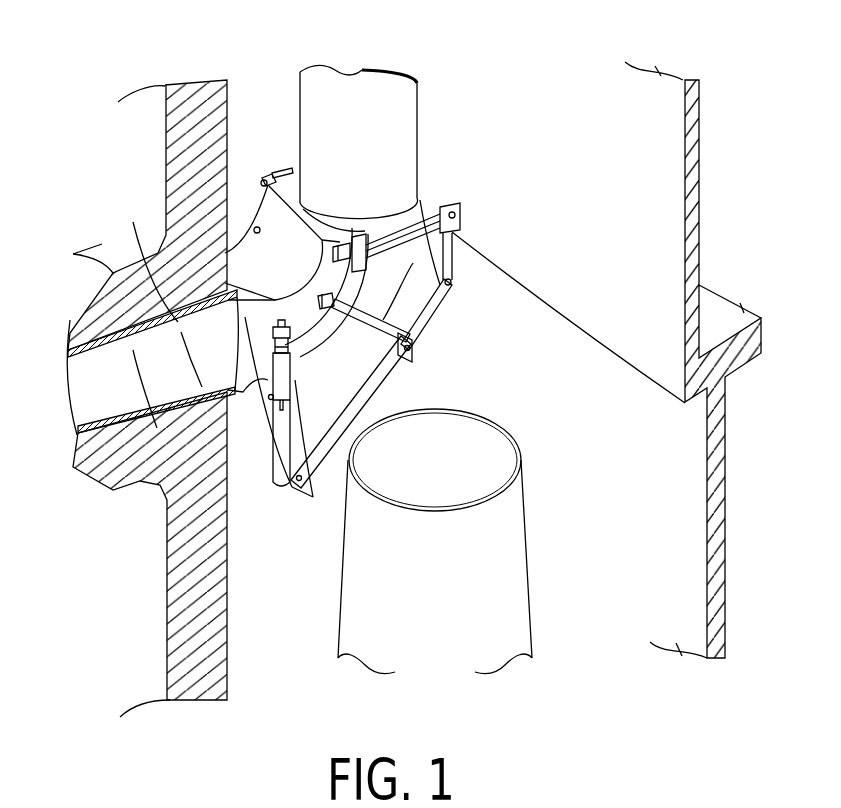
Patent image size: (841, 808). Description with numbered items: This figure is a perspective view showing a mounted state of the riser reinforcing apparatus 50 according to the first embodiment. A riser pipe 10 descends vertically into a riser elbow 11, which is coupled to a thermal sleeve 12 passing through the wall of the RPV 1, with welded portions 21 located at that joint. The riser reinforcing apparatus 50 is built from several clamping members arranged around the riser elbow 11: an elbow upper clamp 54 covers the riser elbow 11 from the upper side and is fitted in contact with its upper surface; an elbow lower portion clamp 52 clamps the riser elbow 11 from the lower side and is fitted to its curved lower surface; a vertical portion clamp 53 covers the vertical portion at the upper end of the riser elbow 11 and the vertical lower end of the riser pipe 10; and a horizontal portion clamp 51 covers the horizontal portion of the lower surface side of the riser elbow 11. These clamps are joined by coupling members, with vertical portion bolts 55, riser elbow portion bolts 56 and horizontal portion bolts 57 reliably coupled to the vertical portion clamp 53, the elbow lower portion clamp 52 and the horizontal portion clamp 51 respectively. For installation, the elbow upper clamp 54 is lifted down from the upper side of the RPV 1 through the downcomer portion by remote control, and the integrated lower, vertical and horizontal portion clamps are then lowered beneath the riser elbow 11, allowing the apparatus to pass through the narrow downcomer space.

The RPV 1 is at (200, 100).
The riser pipe 10 is at (329, 74).
The riser elbow 11 is at (413, 252).
The thermal sleeve 12 is at (85, 395).
The welded portions 21 is at (127, 272).
The riser reinforcing apparatus 50 is at (486, 70).
The horizontal portion clamp 51 is at (250, 443).
The elbow lower portion clamp 52 is at (360, 378).
The vertical portion clamp 53 is at (427, 182).
The elbow upper clamp 54 is at (254, 248).
The vertical portion bolts 55 is at (422, 217).
The riser elbow portion bolts 56 is at (413, 332).
The horizontal portion bolts 57 is at (287, 370).